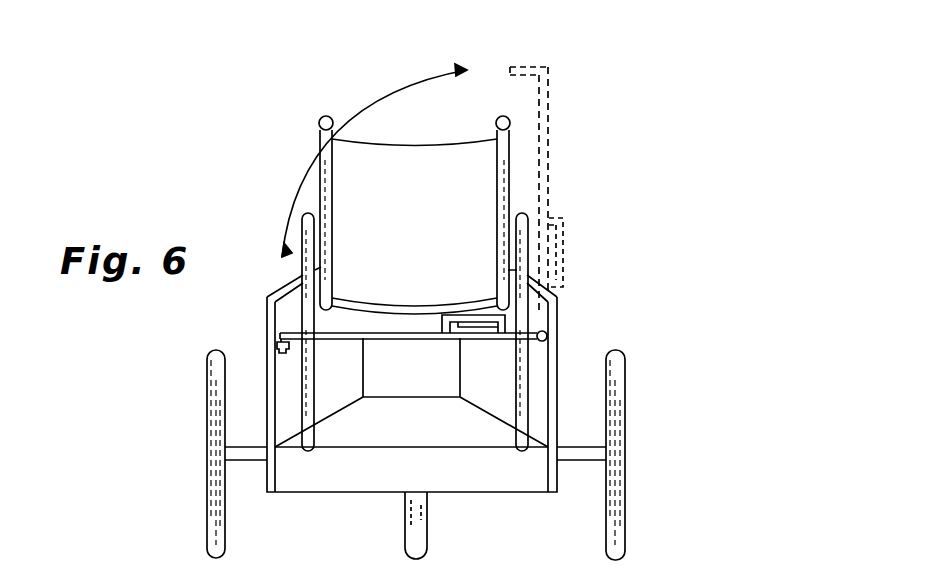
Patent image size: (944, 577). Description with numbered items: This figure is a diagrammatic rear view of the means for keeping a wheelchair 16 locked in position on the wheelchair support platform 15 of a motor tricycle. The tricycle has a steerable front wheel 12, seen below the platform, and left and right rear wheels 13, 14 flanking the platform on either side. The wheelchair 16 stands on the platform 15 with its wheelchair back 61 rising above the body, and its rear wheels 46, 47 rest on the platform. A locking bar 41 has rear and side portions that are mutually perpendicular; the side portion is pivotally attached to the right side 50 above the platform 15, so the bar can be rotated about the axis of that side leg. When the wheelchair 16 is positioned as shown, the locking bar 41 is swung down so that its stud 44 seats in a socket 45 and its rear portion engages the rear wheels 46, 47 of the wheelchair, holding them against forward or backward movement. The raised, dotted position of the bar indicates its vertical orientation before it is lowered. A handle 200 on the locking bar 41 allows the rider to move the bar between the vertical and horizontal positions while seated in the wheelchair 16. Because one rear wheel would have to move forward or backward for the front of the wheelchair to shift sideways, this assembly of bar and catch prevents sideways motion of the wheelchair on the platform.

The steerable front wheel 12 is at (428, 541).
The left rear wheel 13 is at (207, 428).
The right rear wheel 14 is at (620, 429).
The wheelchair support platform 15 is at (407, 455).
The wheelchair 16 is at (402, 128).
The locking bar 41 is at (545, 187).
The stud 44 is at (279, 355).
The socket 45 is at (278, 343).
The left rear wheel of wheelchair 46 is at (314, 373).
The right rear wheel of wheelchair 47 is at (517, 372).
The right side 50 is at (555, 378).
The wheelchair back 61 is at (424, 233).
The handle 200 is at (469, 316).